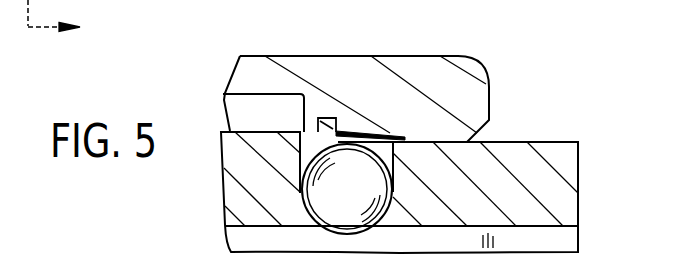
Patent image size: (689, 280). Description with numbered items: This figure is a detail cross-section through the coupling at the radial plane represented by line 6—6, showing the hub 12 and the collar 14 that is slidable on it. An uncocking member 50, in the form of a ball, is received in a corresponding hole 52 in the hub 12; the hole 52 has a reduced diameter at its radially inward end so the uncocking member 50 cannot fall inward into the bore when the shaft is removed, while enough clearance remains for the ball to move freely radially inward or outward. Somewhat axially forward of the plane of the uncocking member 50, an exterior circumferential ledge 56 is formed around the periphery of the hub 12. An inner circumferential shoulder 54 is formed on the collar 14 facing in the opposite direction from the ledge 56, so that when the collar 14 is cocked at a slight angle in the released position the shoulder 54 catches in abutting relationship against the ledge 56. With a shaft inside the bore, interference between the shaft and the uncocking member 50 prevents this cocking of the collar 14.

The section line 6— 6 is at (45, 18).
The hub 12 is at (233, 192).
The collar 14 is at (280, 54).
The uncocking member 50 is at (361, 205).
The hole 52 is at (388, 136).
The inner circumferential shoulder 54 is at (323, 118).
The exterior circumferential ledge 56 is at (343, 133).